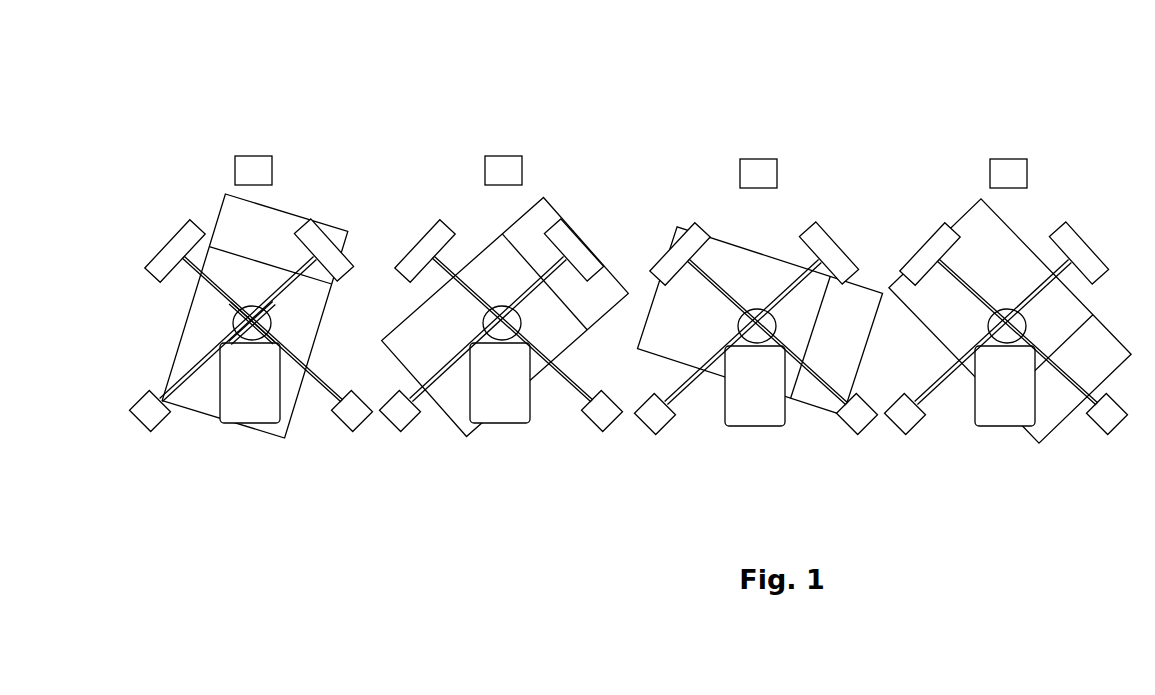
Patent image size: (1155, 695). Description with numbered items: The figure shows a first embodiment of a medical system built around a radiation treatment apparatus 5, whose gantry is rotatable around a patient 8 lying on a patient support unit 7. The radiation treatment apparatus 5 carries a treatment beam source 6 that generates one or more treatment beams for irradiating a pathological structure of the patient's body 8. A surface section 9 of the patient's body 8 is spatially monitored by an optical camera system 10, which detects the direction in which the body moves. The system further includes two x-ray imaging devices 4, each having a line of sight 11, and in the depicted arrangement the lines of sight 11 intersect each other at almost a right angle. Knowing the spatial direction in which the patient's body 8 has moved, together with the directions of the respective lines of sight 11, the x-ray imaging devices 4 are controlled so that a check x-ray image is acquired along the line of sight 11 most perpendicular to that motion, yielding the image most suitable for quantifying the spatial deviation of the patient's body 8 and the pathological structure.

The x-ray imaging device 4 is at (249, 183).
The radiation treatment apparatus 5 is at (255, 245).
The treatment beam source 6 is at (270, 232).
The patient support unit 7 is at (271, 424).
The patient 8 is at (208, 329).
The surface section 9 is at (308, 403).
The optical camera system 10 is at (264, 109).
The line of sight 11 is at (214, 329).